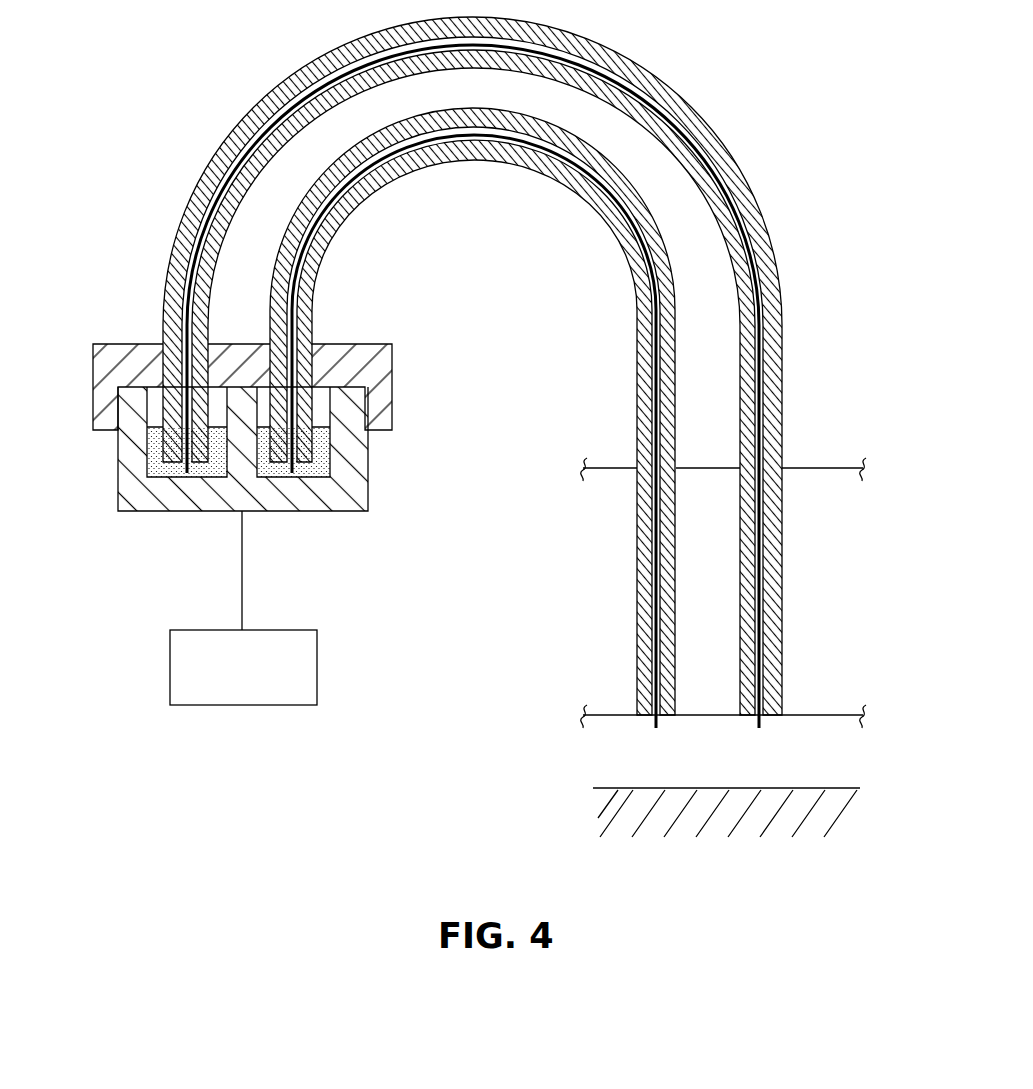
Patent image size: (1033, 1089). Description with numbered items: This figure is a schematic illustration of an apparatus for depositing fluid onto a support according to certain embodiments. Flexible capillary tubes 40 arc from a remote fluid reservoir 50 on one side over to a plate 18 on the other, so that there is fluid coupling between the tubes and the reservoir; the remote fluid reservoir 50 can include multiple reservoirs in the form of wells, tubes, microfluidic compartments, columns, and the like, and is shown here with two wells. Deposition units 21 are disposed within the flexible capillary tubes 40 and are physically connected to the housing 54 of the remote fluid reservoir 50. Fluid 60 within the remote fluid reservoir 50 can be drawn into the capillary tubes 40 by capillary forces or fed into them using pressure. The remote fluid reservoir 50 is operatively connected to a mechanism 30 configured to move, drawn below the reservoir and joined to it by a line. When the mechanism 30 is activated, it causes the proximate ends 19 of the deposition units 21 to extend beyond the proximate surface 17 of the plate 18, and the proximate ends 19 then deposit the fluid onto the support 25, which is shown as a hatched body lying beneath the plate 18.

The proximate surface 17 is at (620, 718).
The plate 18 is at (818, 568).
The proximate ends 19 is at (762, 728).
The deposition units 21 is at (718, 172).
The support 25 is at (856, 808).
The mechanism configured to move 30 is at (317, 673).
The capillary tubes 40 is at (766, 228).
The remote fluid reservoir 50 is at (118, 458).
The housing 54 is at (118, 344).
The fluid 60 is at (317, 453).